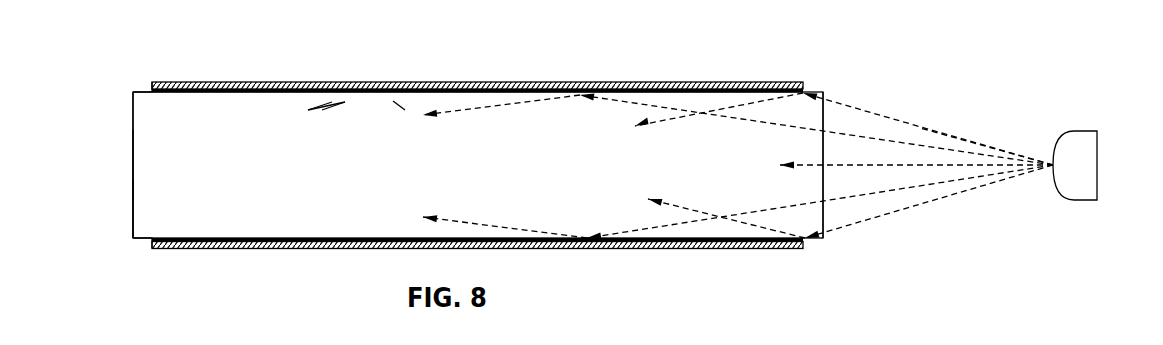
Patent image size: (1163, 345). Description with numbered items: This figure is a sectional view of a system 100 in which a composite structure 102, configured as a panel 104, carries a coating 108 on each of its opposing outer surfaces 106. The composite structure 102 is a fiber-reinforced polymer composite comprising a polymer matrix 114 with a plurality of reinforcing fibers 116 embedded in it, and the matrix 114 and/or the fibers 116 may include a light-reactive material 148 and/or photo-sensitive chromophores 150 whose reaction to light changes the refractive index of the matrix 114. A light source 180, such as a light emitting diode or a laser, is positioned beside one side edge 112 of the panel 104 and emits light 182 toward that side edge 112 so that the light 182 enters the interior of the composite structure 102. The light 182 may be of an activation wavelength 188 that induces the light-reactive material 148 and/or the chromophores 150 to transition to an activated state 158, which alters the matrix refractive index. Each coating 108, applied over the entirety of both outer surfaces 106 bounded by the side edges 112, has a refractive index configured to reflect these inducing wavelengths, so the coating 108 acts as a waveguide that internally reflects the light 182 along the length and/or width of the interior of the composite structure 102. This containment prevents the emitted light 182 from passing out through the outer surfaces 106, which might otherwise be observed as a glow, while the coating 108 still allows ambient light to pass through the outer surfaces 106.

The system 100 is at (948, 57).
The composite structure 102 is at (124, 108).
The panel 104 is at (124, 204).
The outer surfaces 106 is at (148, 90).
The coating 108 is at (213, 82).
The side edges 112 is at (133, 128).
The polymer matrix 114 is at (398, 102).
The reinforcing fibers 116 is at (124, 162).
The light-reactive material 148 is at (310, 107).
The photo-sensitive chromophores 150 is at (322, 107).
The activated state 158 is at (326, 104).
The light source 180 is at (1098, 150).
The light 182 is at (487, 108).
The activation wavelength 188 is at (953, 140).